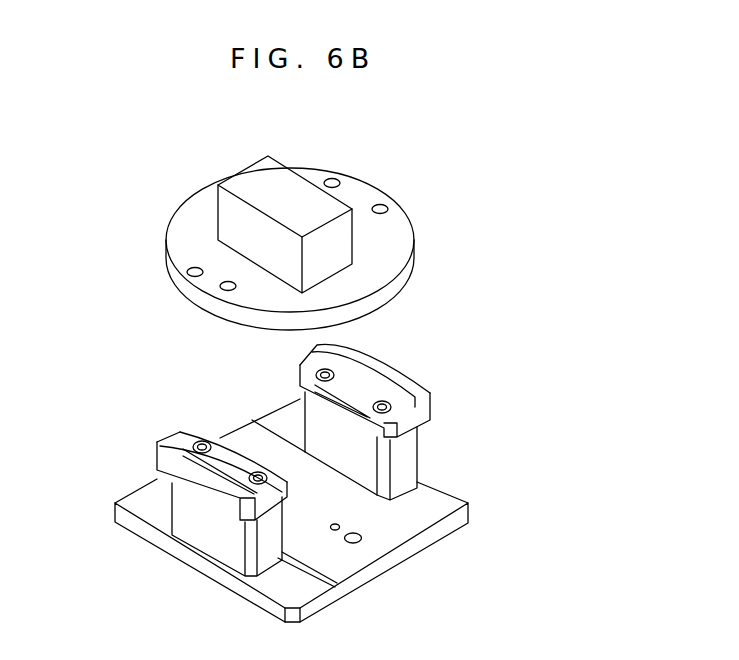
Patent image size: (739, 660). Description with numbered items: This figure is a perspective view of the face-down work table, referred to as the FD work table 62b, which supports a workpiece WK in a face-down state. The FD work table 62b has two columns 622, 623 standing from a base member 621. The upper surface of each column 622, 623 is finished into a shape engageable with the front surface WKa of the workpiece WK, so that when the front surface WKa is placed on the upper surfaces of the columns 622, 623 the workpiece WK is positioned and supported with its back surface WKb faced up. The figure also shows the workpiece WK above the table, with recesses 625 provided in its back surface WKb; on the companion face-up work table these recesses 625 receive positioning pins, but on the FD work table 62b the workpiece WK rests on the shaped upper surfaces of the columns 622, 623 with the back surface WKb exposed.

The workpiece WK is at (294, 232).
The front surface of the workpiece WKa is at (393, 286).
The back surface of the workpiece WKb is at (397, 235).
The recesses 625 is at (339, 178).
The FD work table 62b is at (324, 483).
The base member 621 is at (452, 526).
The column 622 is at (403, 456).
The column 623 is at (222, 538).